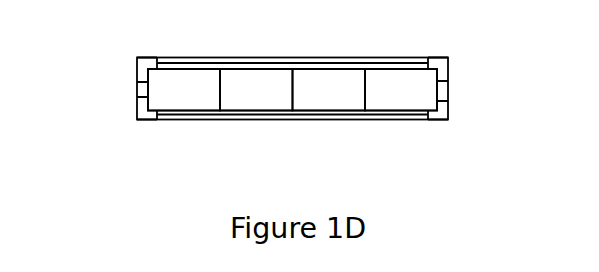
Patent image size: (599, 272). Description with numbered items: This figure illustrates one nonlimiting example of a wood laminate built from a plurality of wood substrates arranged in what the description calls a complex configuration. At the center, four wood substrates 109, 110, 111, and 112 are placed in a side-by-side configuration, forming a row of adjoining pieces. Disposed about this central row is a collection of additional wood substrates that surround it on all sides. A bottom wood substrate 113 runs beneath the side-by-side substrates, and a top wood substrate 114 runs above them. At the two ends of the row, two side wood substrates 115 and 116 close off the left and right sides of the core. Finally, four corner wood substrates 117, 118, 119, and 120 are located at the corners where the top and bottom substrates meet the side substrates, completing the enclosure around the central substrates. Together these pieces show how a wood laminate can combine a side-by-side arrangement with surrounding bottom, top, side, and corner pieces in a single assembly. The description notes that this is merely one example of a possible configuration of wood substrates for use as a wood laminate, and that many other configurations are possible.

The wood substrate 109 is at (165, 102).
The wood substrate 110 is at (237, 102).
The wood substrate 111 is at (310, 102).
The wood substrate 112 is at (382, 102).
The bottom wood substrate 113 is at (238, 120).
The top wood substrate 114 is at (262, 63).
The side wood substrate 115 is at (137, 79).
The side wood substrate 116 is at (448, 93).
The corner wood substrate 117 is at (138, 58).
The corner wood substrate 118 is at (449, 60).
The corner wood substrate 119 is at (432, 120).
The corner wood substrate 120 is at (137, 120).